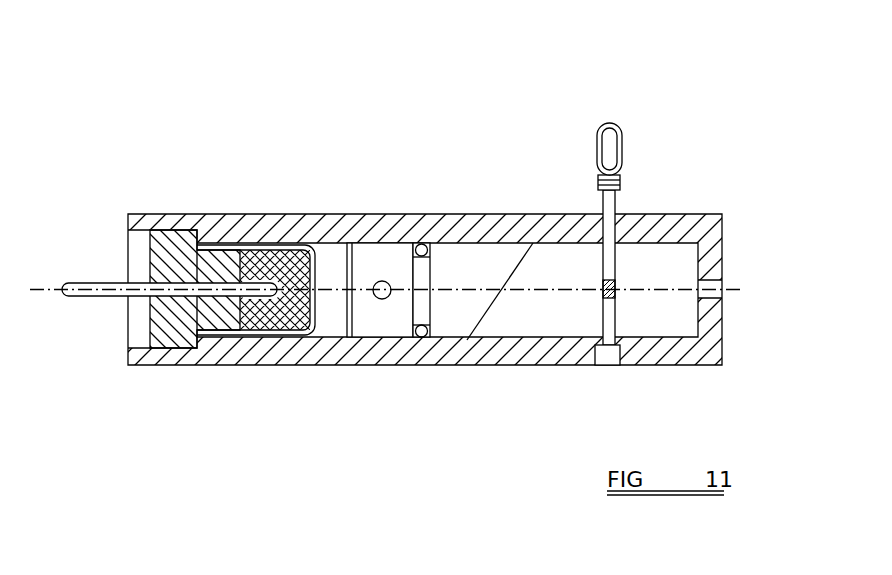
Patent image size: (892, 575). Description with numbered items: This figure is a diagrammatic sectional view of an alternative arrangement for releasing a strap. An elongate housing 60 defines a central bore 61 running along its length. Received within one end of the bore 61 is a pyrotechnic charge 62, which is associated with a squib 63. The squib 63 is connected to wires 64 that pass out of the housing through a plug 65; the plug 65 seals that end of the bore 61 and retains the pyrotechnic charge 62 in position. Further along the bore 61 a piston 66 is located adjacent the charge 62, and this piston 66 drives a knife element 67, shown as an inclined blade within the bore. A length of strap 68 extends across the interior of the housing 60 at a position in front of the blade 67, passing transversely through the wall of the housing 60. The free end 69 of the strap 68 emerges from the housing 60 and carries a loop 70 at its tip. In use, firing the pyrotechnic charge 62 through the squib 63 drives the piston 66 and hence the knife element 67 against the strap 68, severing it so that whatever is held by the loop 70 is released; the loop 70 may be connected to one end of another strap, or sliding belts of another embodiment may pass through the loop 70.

The elongate housing 60 is at (382, 367).
The central bore 61 is at (483, 232).
The pyrotechnic charge 62 is at (265, 328).
The squib 63 is at (258, 246).
The wires 64 is at (90, 297).
The plug 65 is at (172, 340).
The piston 66 is at (387, 243).
The knife element 67 is at (504, 367).
The length of strap 68 is at (617, 320).
The free end of the strap 69 is at (617, 202).
The loop 70 is at (600, 147).